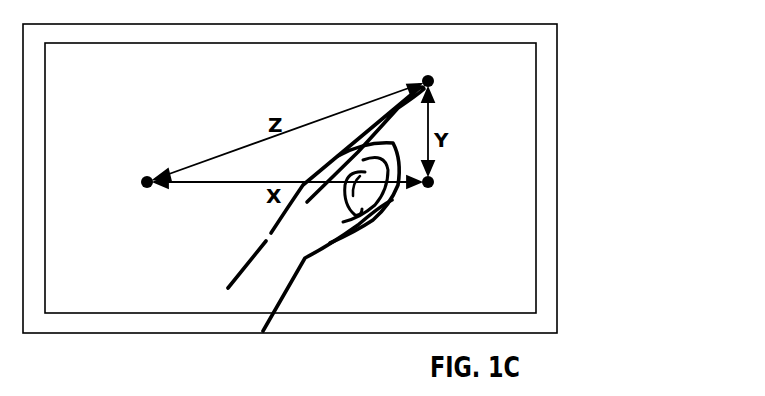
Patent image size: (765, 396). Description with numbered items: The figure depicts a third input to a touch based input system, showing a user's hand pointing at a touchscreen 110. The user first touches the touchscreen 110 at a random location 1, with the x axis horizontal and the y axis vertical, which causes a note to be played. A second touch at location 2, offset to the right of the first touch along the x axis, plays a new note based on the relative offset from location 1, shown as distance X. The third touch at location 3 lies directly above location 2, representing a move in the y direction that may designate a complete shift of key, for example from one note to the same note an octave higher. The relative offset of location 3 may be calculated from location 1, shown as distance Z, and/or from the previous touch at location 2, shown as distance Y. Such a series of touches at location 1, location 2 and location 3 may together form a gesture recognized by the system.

The touchscreen 110 is at (507, 167).
The location 1 is at (148, 194).
The location 2 is at (428, 194).
The location 3 is at (428, 69).